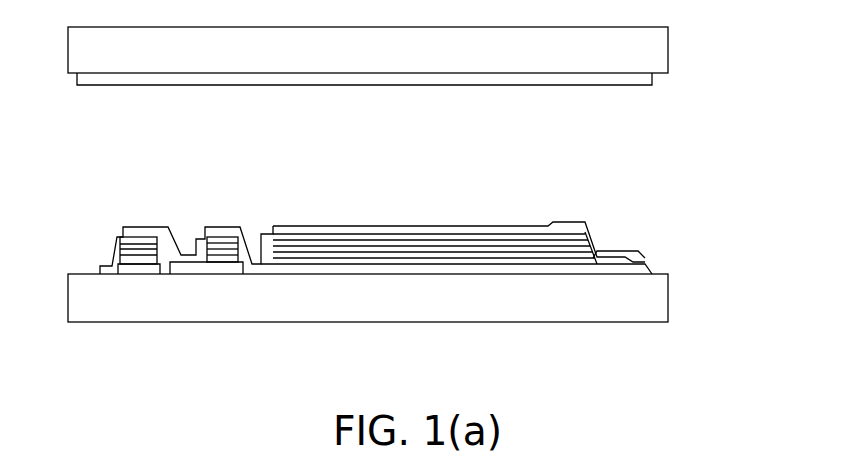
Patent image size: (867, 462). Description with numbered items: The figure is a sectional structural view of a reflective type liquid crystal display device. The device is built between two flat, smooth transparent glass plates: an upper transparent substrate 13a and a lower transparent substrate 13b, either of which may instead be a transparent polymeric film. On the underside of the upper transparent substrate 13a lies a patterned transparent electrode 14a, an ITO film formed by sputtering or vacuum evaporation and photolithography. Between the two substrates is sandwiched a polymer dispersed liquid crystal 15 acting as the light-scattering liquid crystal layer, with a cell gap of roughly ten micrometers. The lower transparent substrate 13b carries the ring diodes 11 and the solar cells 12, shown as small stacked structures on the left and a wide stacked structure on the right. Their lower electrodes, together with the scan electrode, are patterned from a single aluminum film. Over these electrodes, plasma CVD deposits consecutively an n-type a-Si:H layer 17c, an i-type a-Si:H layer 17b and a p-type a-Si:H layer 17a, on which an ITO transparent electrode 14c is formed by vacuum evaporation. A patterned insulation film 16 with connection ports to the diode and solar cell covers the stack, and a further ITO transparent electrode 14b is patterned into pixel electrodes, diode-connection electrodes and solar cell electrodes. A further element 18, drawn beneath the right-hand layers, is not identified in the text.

The ring diode 11 is at (186, 294).
The solar cell 12 is at (502, 243).
The transparent substrate 13a is at (650, 48).
The transparent substrate 13b is at (596, 292).
The transparent electrode 14a is at (640, 77).
The transparent electrode 14b is at (512, 227).
The transparent electrode 14c is at (592, 236).
The polymer dispersed liquid crystal 15 is at (475, 149).
The insulation film 16 is at (560, 229).
The p-type a-Si:H 17a is at (598, 246).
The i-type a-Si:H 17b is at (605, 253).
The n-type a-Si:H 17c is at (620, 256).
The anode electrode 18 is at (596, 268).